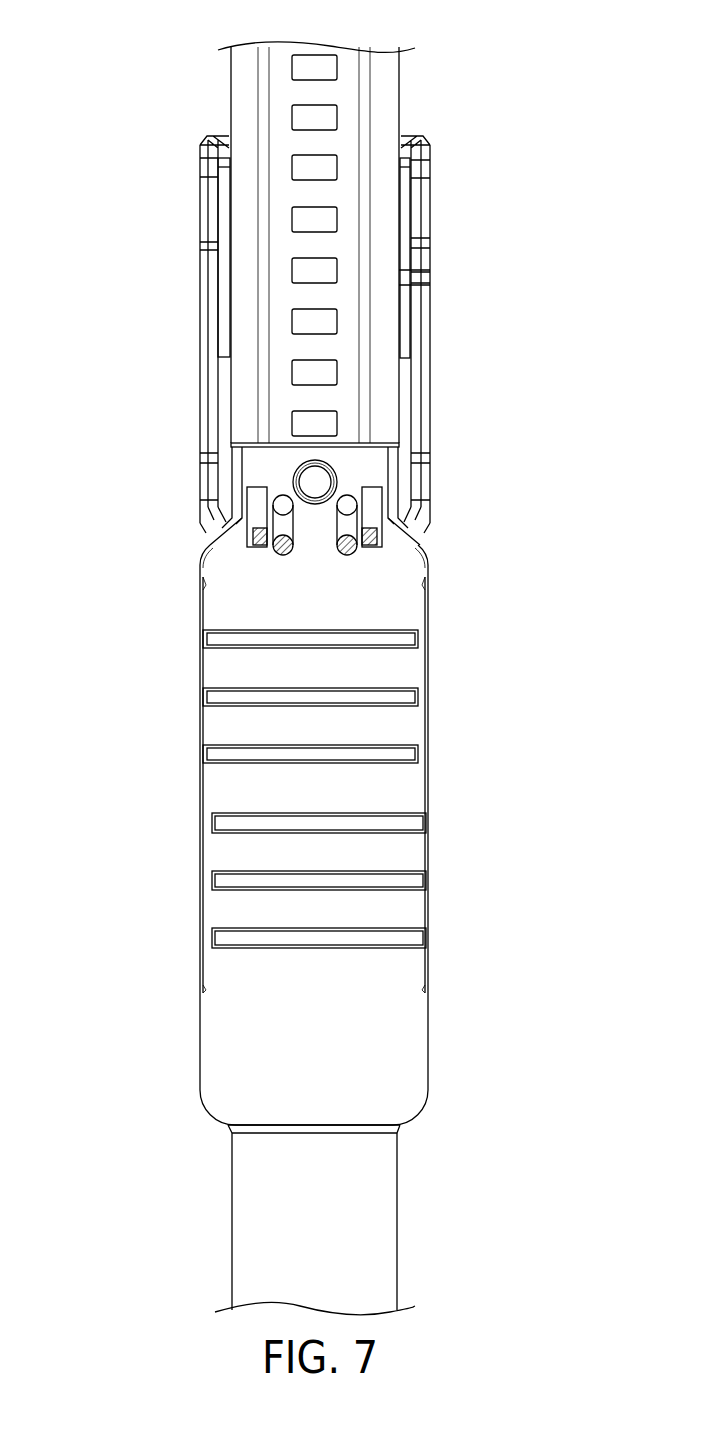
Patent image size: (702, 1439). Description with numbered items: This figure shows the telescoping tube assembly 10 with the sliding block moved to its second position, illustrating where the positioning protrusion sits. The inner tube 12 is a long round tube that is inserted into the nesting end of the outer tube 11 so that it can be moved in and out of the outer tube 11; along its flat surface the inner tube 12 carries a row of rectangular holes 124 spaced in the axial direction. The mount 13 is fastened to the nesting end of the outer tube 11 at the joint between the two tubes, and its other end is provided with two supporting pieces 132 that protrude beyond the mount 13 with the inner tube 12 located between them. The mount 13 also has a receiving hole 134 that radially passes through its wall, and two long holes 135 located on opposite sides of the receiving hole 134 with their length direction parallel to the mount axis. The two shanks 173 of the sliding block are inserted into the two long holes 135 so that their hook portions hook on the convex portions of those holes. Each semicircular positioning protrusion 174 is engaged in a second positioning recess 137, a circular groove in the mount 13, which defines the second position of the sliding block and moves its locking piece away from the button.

The tool/handle assembly 10 is at (515, 428).
The outer tube 11 is at (245, 1233).
The inner tube 12 is at (230, 77).
The holes 124 is at (318, 62).
The mount 13 is at (196, 314).
The supporting pieces 132 is at (207, 203).
The receiving hole 134 is at (298, 474).
The long holes 135 is at (252, 497).
The second positioning recess 137 is at (283, 556).
The shanks 173 is at (257, 537).
The positioning protrusion 174 is at (275, 550).